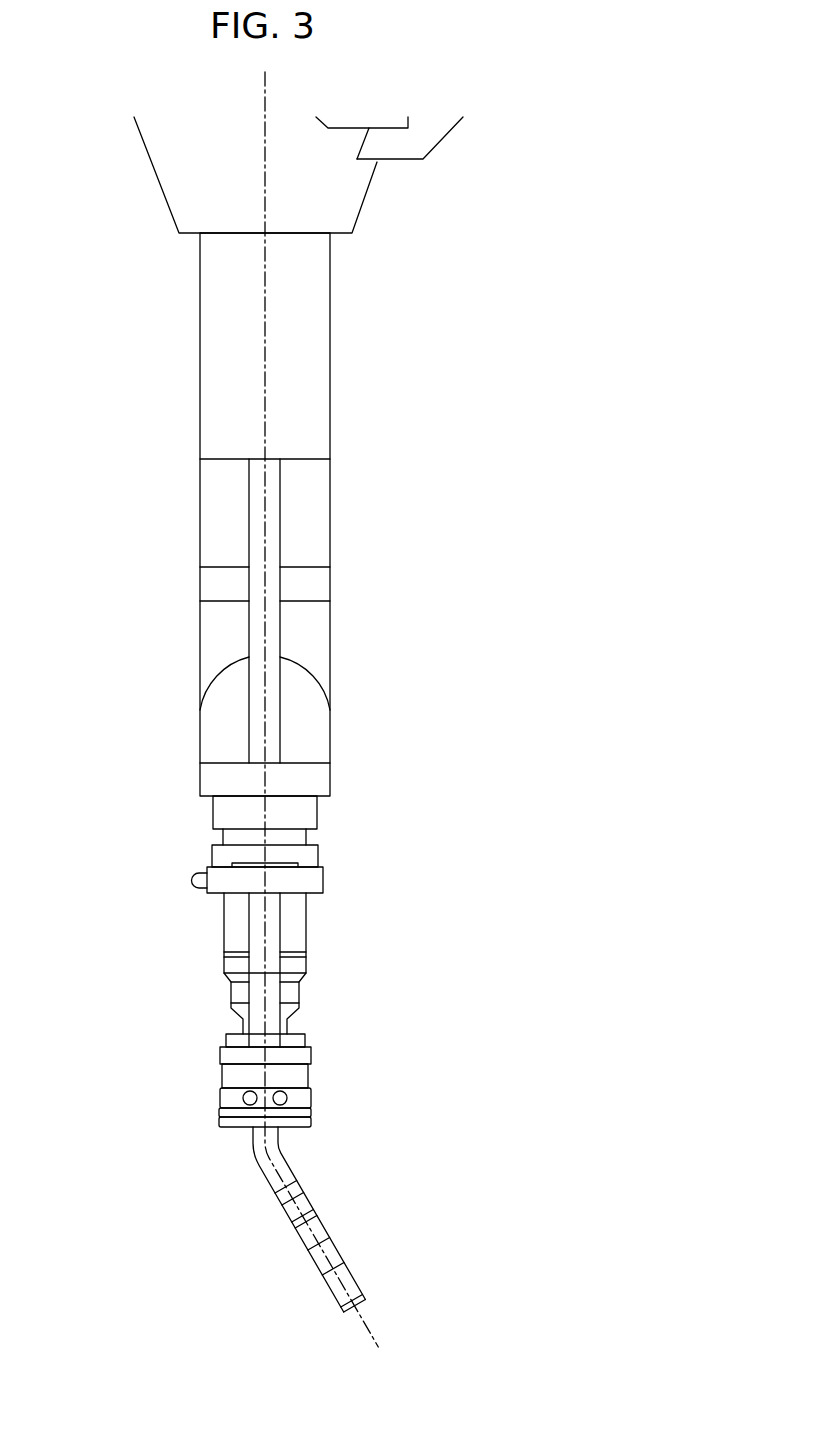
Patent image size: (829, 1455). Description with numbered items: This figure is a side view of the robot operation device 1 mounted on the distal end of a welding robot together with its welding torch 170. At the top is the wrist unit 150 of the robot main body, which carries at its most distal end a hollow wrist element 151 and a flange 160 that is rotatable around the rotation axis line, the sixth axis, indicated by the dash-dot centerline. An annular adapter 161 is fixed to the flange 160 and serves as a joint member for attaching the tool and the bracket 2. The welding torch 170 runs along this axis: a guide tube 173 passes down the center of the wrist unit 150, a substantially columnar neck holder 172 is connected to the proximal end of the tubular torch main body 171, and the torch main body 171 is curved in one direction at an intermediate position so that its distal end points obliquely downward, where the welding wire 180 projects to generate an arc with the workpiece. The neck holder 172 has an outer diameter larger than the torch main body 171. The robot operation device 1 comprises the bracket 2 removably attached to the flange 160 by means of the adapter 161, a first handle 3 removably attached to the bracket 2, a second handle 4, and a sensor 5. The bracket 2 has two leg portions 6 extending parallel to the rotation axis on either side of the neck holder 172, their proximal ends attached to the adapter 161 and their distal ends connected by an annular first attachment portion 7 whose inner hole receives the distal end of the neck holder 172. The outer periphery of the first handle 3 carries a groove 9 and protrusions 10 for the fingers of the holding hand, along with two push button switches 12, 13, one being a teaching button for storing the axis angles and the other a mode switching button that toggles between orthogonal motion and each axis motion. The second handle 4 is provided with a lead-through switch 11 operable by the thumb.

The robot operation device 1 is at (188, 942).
The bracket 2 is at (283, 915).
The first handle 3 is at (219, 1120).
The second handle 4 is at (323, 878).
The sensor 5 is at (220, 1072).
The leg portions 6 is at (299, 990).
The first attachment portion 7 is at (226, 1040).
The groove 9 is at (311, 1110).
The protrusions 10 is at (311, 1122).
The lead-through switch 11 is at (194, 880).
The push button switch 12 is at (243, 1098).
The push button switch 13 is at (287, 1098).
The wrist unit 150 is at (199, 620).
The hollow wrist element 151 is at (330, 778).
The flange 160 is at (213, 810).
The adapter 161 is at (212, 857).
The welding torch 170 is at (313, 1228).
The torch main body 171 is at (258, 1170).
The neck holder 172 is at (306, 945).
The guide tube 173 is at (282, 716).
The welding wire 180 is at (365, 1310).